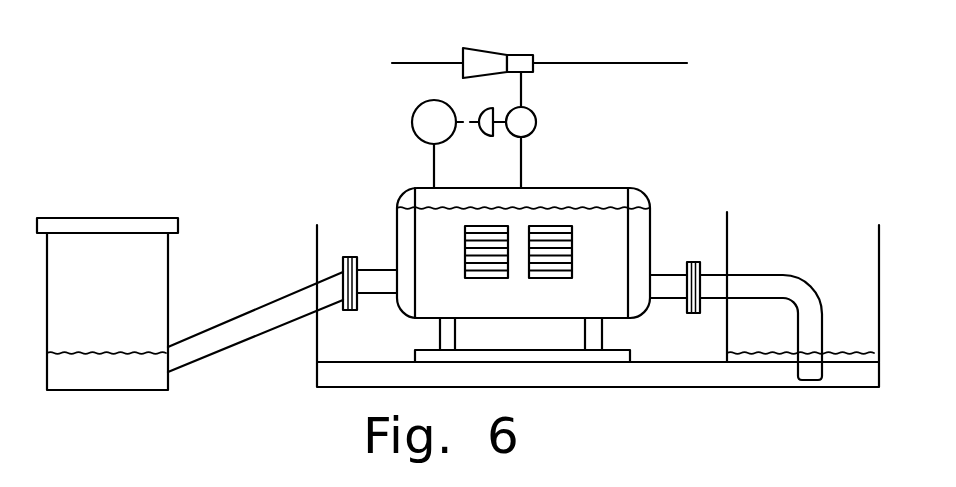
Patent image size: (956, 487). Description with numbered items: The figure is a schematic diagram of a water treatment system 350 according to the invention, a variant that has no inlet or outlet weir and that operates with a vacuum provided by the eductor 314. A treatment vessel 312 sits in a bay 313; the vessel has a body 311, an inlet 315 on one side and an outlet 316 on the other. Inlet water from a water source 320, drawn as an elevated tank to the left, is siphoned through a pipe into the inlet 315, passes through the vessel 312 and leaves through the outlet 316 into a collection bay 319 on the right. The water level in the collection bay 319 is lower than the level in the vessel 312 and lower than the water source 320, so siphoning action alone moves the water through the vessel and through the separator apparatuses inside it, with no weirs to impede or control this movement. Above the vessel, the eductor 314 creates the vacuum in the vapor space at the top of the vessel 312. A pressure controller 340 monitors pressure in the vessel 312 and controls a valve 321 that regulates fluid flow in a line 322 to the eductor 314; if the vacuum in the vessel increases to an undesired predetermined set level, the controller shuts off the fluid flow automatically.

The system 350 is at (272, 145).
The pressure controller 340 is at (412, 120).
The eductor 314 is at (533, 55).
The valve 321 is at (537, 118).
The line 322 is at (522, 177).
The body 311 is at (397, 200).
The treatment vessel 312 is at (645, 198).
The bay 313 is at (315, 250).
The collection bay 319 is at (727, 233).
The water source 320 is at (168, 307).
The inlet 315 is at (395, 295).
The outlet 316 is at (650, 297).